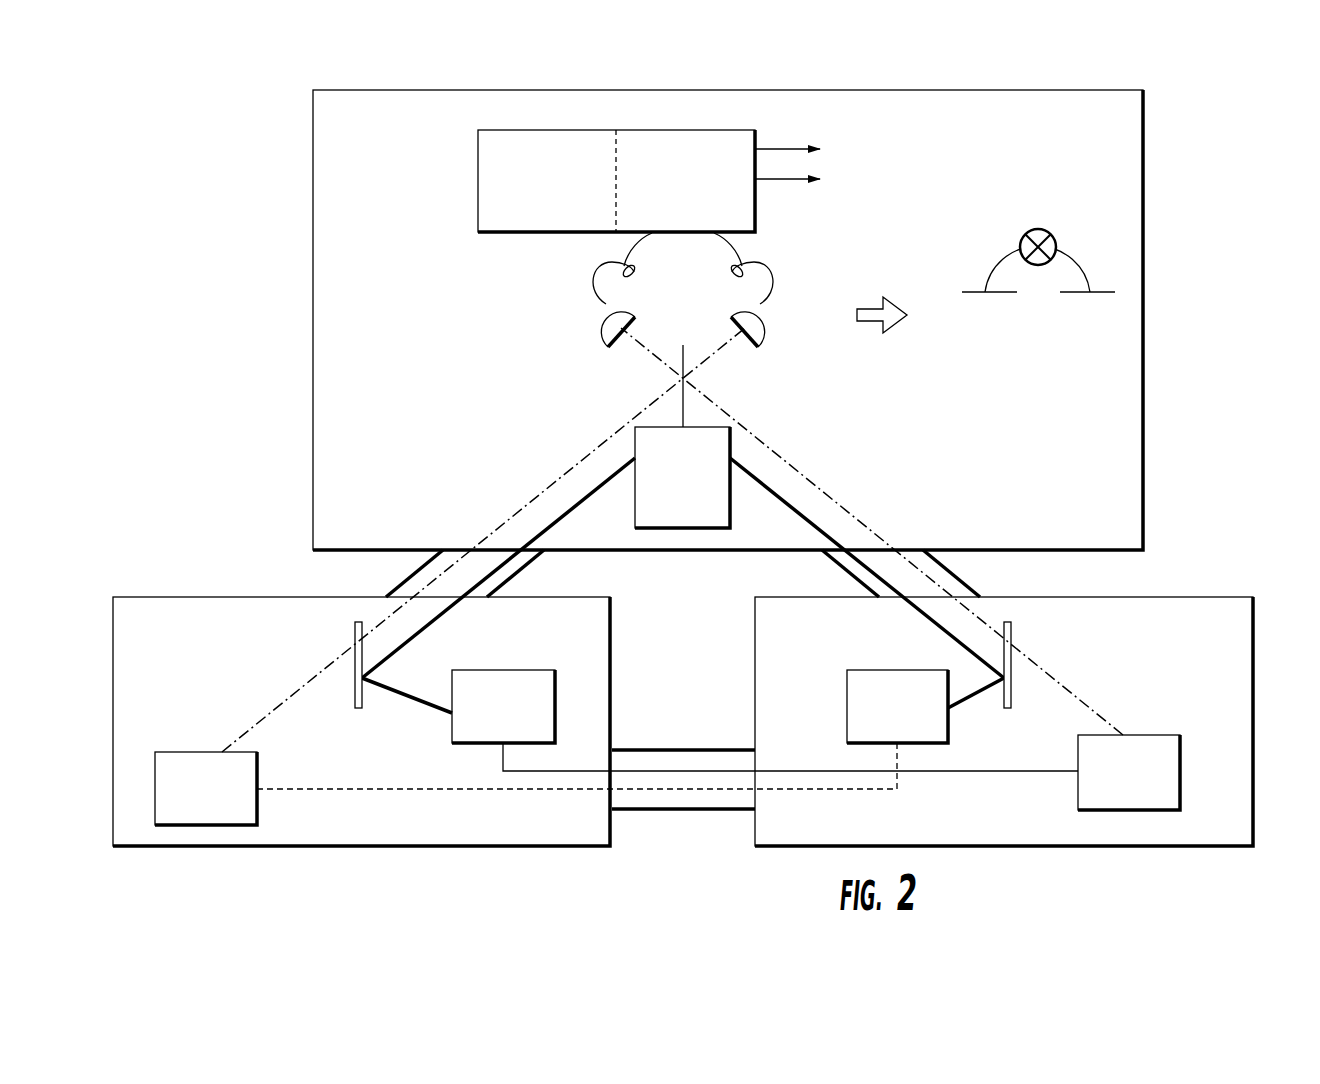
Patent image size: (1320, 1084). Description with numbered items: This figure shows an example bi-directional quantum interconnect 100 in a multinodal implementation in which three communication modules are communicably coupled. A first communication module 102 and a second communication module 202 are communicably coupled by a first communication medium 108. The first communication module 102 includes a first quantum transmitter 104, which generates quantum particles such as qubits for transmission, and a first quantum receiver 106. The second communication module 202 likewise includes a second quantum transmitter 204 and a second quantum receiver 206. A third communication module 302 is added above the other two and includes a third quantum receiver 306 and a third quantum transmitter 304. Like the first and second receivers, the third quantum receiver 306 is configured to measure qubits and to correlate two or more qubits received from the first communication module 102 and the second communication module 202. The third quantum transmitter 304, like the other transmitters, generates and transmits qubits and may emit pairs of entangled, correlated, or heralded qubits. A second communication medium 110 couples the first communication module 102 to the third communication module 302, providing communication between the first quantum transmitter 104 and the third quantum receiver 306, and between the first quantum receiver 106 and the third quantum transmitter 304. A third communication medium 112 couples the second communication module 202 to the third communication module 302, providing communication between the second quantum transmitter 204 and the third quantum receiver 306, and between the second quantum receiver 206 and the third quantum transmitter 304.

The bi-directional quantum interconnect 100 is at (217, 163).
The first communication module 102 is at (128, 592).
The first quantum transmitter 104 is at (184, 748).
The first quantum receiver 106 is at (452, 735).
The first communication medium 108 is at (655, 813).
The second communication medium 110 is at (385, 582).
The third communication medium 112 is at (978, 585).
The second communication module 202 is at (1256, 690).
The second quantum transmitter 204 is at (1156, 730).
The second quantum receiver 206 is at (952, 727).
The third communication module 302 is at (1147, 232).
The third quantum transmitter 304 is at (741, 452).
The third quantum receiver 306 is at (490, 323).